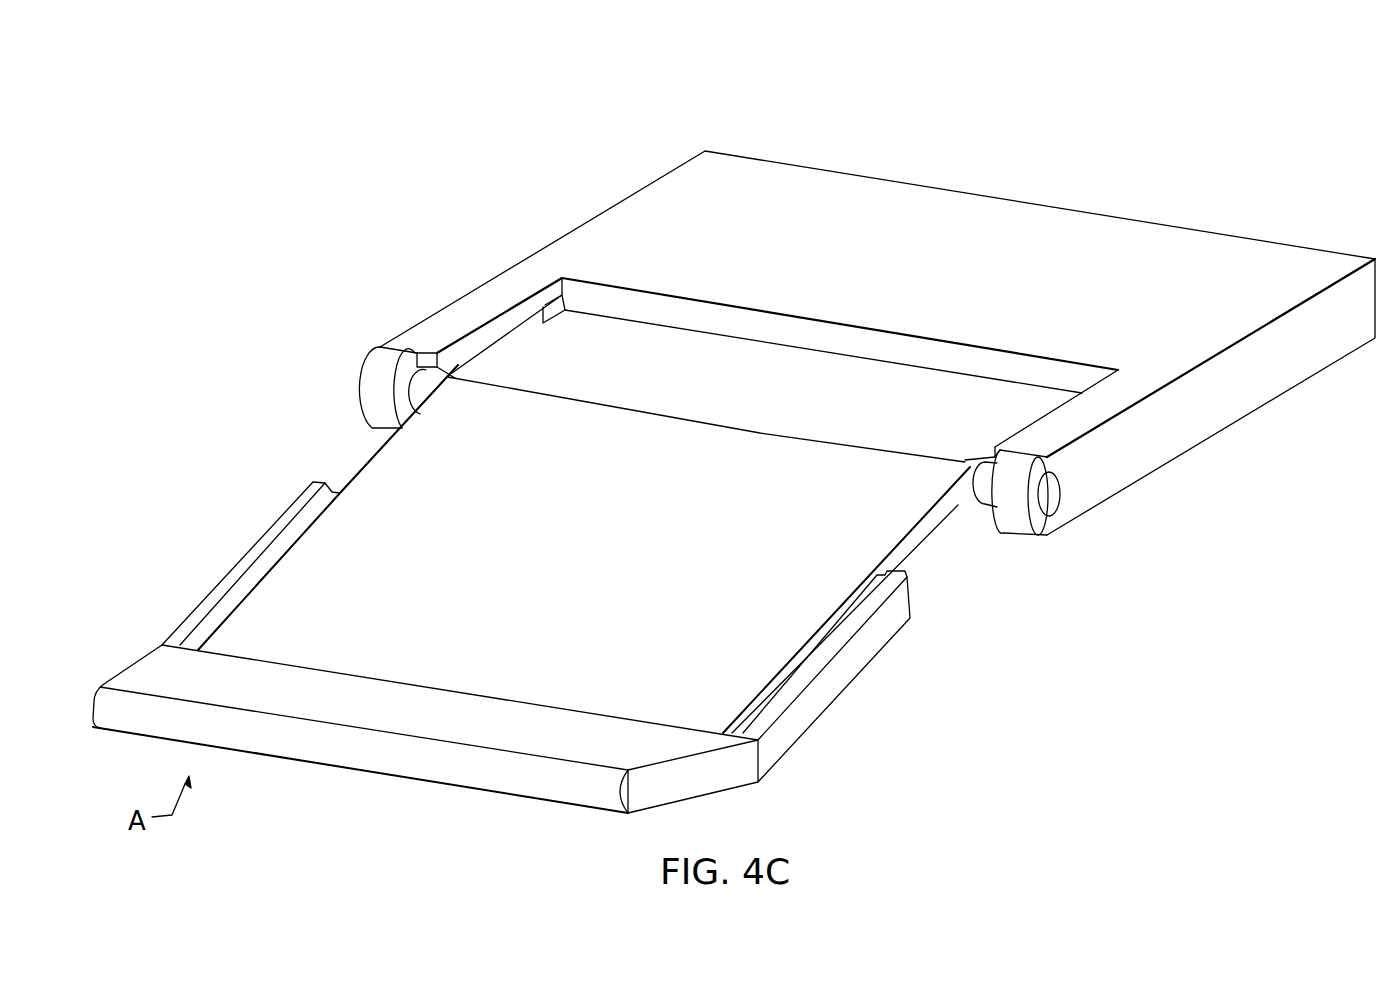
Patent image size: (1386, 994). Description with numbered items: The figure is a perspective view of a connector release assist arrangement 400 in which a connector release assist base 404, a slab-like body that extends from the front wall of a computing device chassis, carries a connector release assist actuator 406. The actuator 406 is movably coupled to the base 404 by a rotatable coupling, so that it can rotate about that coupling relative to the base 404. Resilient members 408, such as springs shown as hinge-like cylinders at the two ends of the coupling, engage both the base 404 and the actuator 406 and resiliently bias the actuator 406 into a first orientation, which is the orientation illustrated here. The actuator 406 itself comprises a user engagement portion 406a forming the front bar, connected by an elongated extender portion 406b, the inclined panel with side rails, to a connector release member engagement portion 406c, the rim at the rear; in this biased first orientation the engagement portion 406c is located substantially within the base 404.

The electronic device 400 is at (1284, 120).
The connector release assist base 404 is at (1008, 215).
The connector release assist actuator 406 is at (162, 643).
The user engagement portion 406a is at (495, 733).
The elongated extender portion 406b is at (360, 490).
The connector release member engagement portion 406c is at (685, 352).
The resilient members 408 is at (420, 390).